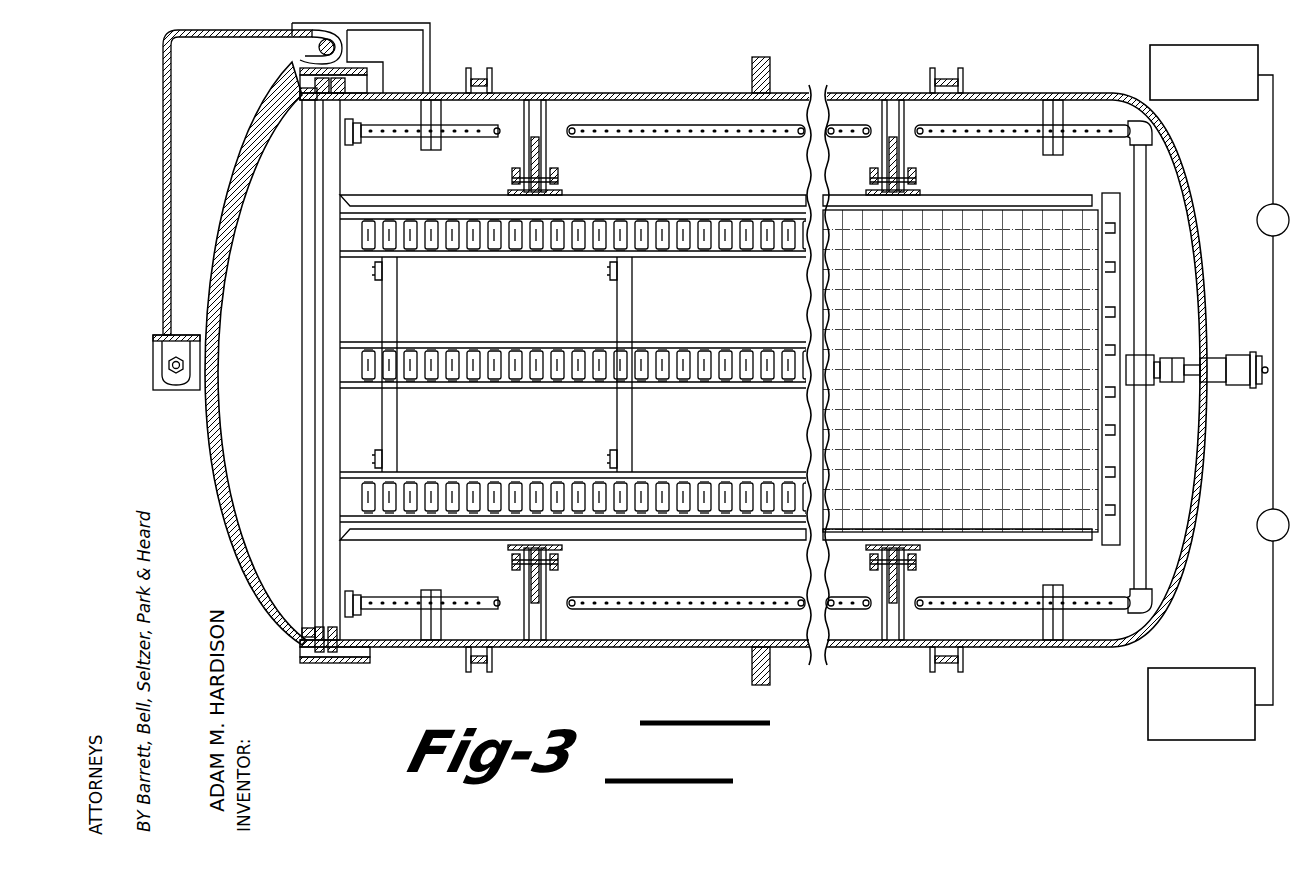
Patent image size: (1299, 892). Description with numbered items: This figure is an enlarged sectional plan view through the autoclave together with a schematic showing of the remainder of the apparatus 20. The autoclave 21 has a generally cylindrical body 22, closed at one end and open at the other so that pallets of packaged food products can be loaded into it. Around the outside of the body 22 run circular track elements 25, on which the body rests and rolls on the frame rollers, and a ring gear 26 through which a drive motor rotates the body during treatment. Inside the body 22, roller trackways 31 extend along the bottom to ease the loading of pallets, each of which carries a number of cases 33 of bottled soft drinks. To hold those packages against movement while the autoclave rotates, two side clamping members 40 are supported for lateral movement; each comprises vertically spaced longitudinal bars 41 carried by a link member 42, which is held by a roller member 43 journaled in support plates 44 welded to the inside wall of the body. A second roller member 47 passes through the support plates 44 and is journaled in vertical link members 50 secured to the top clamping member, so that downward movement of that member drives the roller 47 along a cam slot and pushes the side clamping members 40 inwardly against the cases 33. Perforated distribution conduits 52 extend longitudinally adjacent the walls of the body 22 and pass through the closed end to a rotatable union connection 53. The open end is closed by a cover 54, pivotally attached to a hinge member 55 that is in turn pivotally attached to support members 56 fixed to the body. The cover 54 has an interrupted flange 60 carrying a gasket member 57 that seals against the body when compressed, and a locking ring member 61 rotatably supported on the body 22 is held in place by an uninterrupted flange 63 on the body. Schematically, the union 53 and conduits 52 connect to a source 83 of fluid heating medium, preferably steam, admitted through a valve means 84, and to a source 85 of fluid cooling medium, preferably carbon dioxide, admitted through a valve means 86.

The apparatus 20 is at (640, 672).
The autoclave 21 is at (628, 653).
The body 22 is at (691, 93).
The circular track elements 25 is at (490, 70).
The ring gear 26 is at (756, 44).
The roller trackways 31 is at (522, 258).
The cases 33 is at (948, 218).
The side clamping members 40 is at (730, 370).
The bars 41 is at (458, 198).
The link member 42 is at (540, 165).
The roller member 43 is at (522, 140).
The support plates 44 is at (709, 369).
The roller member 47 is at (512, 180).
The vertical link members 50 is at (510, 178).
The distribution conduits 52 is at (400, 138).
The rotatable union connection 53 is at (1242, 354).
The cover 54 is at (199, 394).
The hinge member 55 is at (163, 136).
The support members 56 is at (400, 45).
The gasket member 57 is at (303, 622).
The flange 60 is at (318, 662).
The locking ring member 61 is at (295, 66).
The uninterrupted flange 63 is at (345, 645).
The source of fluid heating medium 83 is at (1230, 668).
The valve means 84 is at (1258, 538).
The source of fluid cooling medium 85 is at (1236, 100).
The valve means 86 is at (1256, 220).